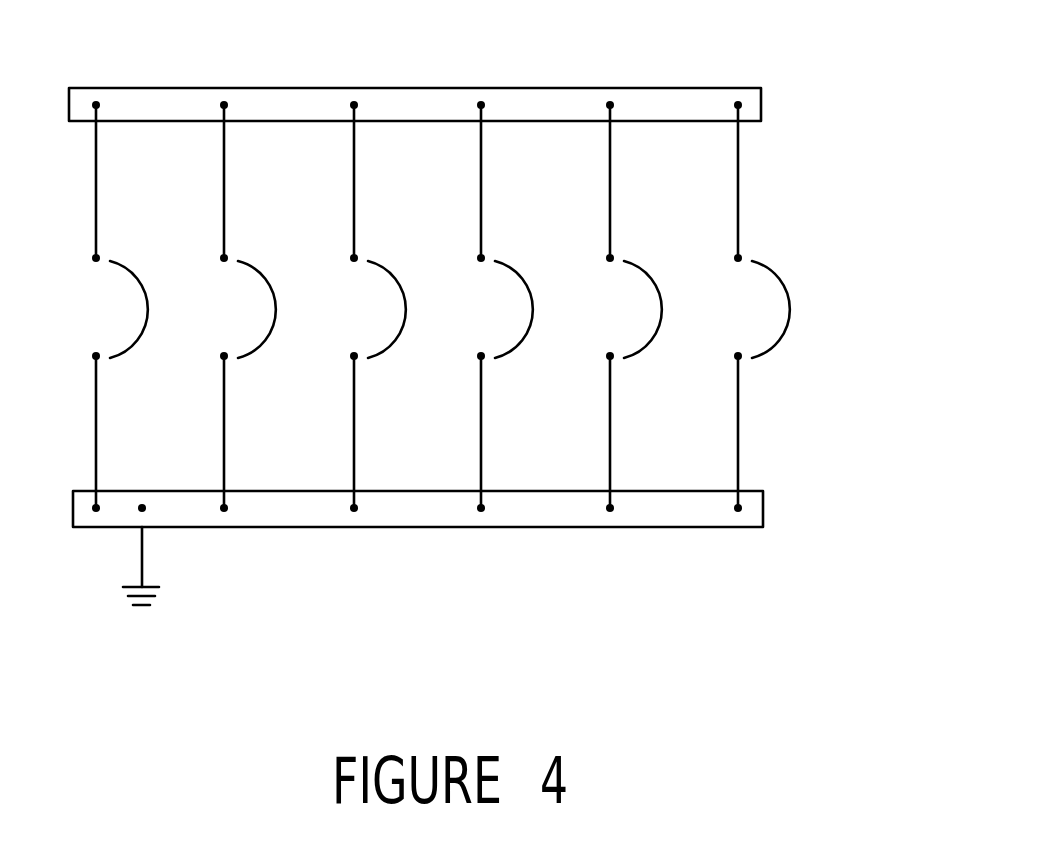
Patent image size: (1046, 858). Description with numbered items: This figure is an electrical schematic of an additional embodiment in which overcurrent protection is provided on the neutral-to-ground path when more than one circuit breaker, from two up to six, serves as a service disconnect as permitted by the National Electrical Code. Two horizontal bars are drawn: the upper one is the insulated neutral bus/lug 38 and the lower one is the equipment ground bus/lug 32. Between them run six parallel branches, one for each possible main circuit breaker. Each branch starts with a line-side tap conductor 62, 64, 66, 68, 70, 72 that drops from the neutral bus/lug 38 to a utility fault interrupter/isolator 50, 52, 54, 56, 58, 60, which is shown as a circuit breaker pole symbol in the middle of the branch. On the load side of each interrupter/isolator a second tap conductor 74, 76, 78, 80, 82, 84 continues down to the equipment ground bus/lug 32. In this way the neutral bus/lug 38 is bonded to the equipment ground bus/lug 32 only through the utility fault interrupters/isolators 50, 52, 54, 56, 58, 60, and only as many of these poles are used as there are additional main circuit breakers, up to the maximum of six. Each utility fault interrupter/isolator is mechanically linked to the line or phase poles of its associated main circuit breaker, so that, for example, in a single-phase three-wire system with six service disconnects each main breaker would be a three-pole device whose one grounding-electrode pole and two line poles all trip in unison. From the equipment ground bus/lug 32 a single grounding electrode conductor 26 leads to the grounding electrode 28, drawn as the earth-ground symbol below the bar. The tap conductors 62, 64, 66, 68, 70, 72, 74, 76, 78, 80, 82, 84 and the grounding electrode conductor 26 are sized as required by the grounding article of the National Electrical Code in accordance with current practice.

The insulated neutral bus/lug 38 is at (715, 87).
The equipment ground bus/lug 32 is at (723, 525).
The grounding electrode conductor 26 is at (142, 548).
The grounding electrode 28 is at (150, 604).
The utility fault interrupter and isolator of main circuit breaker #1 50 is at (148, 292).
The utility fault interrupter and isolator of main circuit breaker #2 52 is at (276, 292).
The utility fault interrupter and isolator of main circuit breaker #3 54 is at (406, 292).
The utility fault interrupter and isolator of main circuit breaker #4 56 is at (533, 292).
The utility fault interrupter and isolator of main circuit breaker #5 58 is at (662, 292).
The utility fault interrupter and isolator of main circuit breaker #6 60 is at (790, 292).
The tap conductor between neutral and utility fault interrupter and isolator of main 62 is at (96, 196).
The tap conductor between neutral and utility fault interrupter and isolator of main 64 is at (224, 196).
The tap conductor between neutral and utility fault interrupter and isolator of main 66 is at (354, 196).
The tap conductor between neutral and utility fault interrupter and isolator of main 68 is at (481, 196).
The tap conductor between neutral and utility fault interrupter and isolator of main 70 is at (610, 196).
The tap conductor between neutral and utility fault interrupter and isolator of main 72 is at (738, 196).
The tap conductor between equipment ground and utility fault interrupter and isolato 74 is at (96, 433).
The tap conductor between equipment ground and utility fault interrupter and isolato 76 is at (224, 433).
The tap conductor between equipment ground and utility fault interrupter and isolato 78 is at (354, 433).
The tap conductor between equipment ground and utility fault interrupter and isolato 80 is at (481, 433).
The tap conductor between equipment ground and utility fault interrupter and isolato 82 is at (610, 433).
The tap conductor between equipment ground and utility fault interrupter and isolato 84 is at (738, 433).